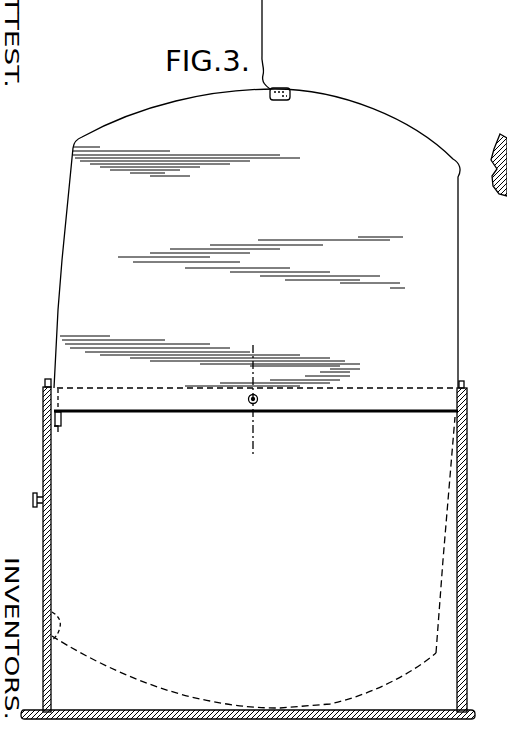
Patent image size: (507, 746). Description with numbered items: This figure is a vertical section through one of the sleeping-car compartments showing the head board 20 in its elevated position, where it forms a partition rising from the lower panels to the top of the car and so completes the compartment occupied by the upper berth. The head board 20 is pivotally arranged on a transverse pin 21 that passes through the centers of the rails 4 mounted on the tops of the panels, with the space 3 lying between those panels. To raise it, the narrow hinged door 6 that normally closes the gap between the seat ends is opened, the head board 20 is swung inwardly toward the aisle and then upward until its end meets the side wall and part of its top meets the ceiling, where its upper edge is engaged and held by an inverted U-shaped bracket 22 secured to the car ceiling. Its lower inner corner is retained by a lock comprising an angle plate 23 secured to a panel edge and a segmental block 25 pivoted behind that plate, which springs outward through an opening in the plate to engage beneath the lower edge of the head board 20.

The space 3 is at (413, 602).
The rails 4 is at (253, 402).
The narrow hinged door 6 is at (43, 455).
The head board 20 is at (257, 250).
The transverse pin 21 is at (250, 404).
The inverted U-shaped bracket 22 is at (290, 92).
The angle plate 23 is at (57, 432).
The segmental block 25 is at (62, 422).